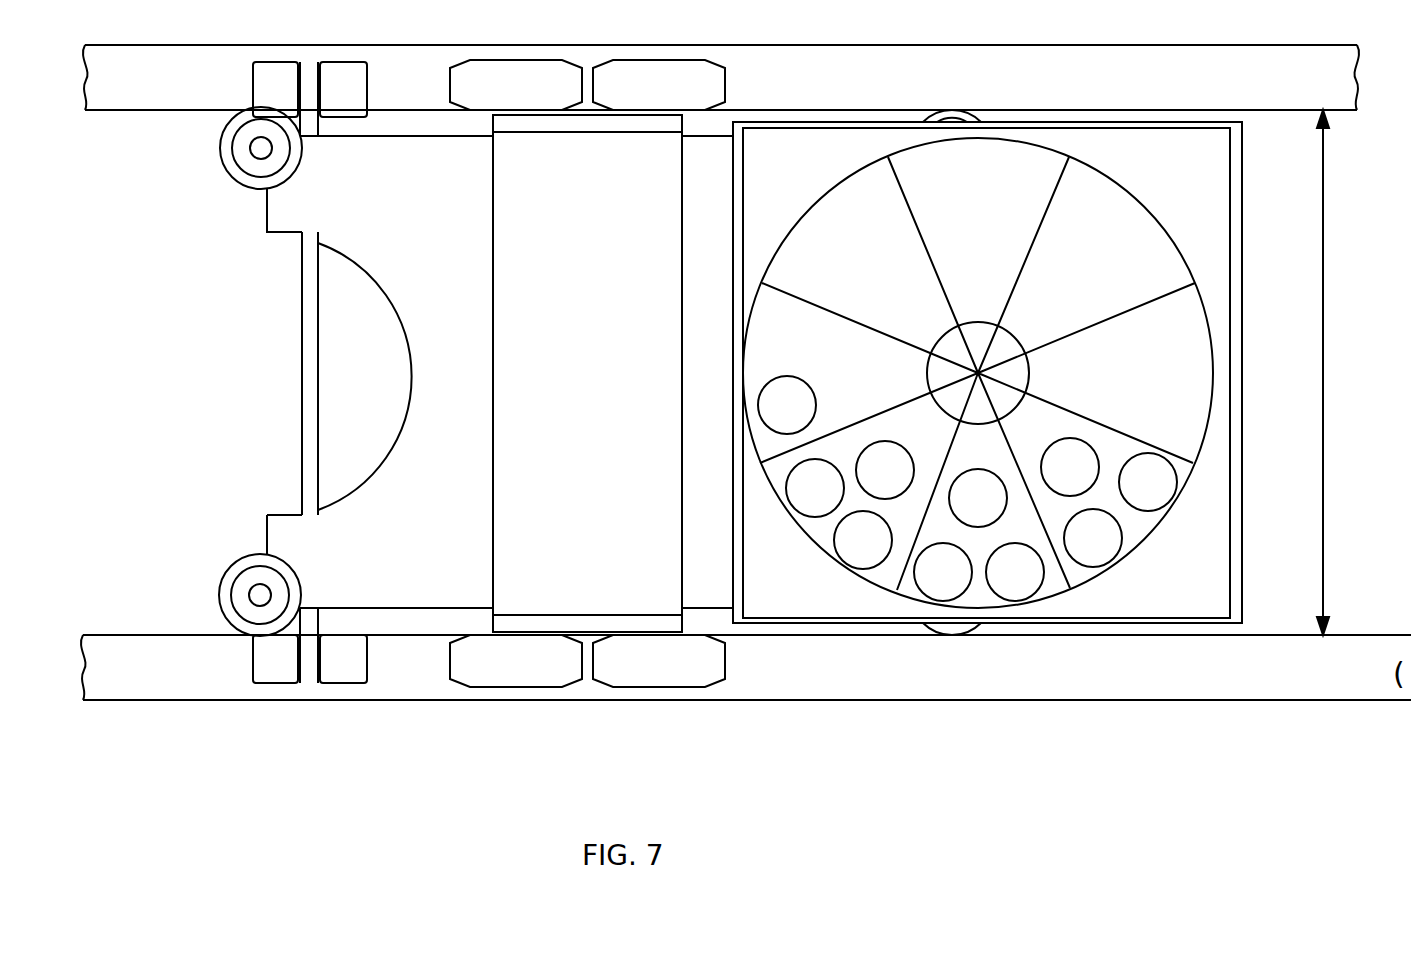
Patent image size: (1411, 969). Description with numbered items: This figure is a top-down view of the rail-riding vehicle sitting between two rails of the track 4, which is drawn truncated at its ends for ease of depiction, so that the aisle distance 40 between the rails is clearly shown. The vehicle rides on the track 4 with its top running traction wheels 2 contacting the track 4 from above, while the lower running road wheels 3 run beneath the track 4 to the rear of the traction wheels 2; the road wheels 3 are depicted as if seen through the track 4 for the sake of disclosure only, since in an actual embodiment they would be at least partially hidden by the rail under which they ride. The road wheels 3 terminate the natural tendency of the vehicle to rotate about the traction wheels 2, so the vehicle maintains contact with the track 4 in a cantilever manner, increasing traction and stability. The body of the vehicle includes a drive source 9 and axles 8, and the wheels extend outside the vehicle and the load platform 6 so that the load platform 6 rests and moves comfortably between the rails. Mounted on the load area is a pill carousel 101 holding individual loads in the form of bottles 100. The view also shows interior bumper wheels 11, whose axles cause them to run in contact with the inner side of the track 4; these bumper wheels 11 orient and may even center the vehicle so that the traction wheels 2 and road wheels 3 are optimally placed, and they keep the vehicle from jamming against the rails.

The traction wheels 2 is at (563, 62).
The road wheels 3 is at (247, 82).
The track 4 is at (873, 46).
The load platform 6 is at (1160, 123).
The axles 8 is at (297, 373).
The drive source 9 is at (587, 373).
The bumper wheels 11 is at (232, 178).
The aisle distance 40 is at (1323, 342).
The bottles 100 is at (1087, 443).
The pill carousel 101 is at (1138, 195).